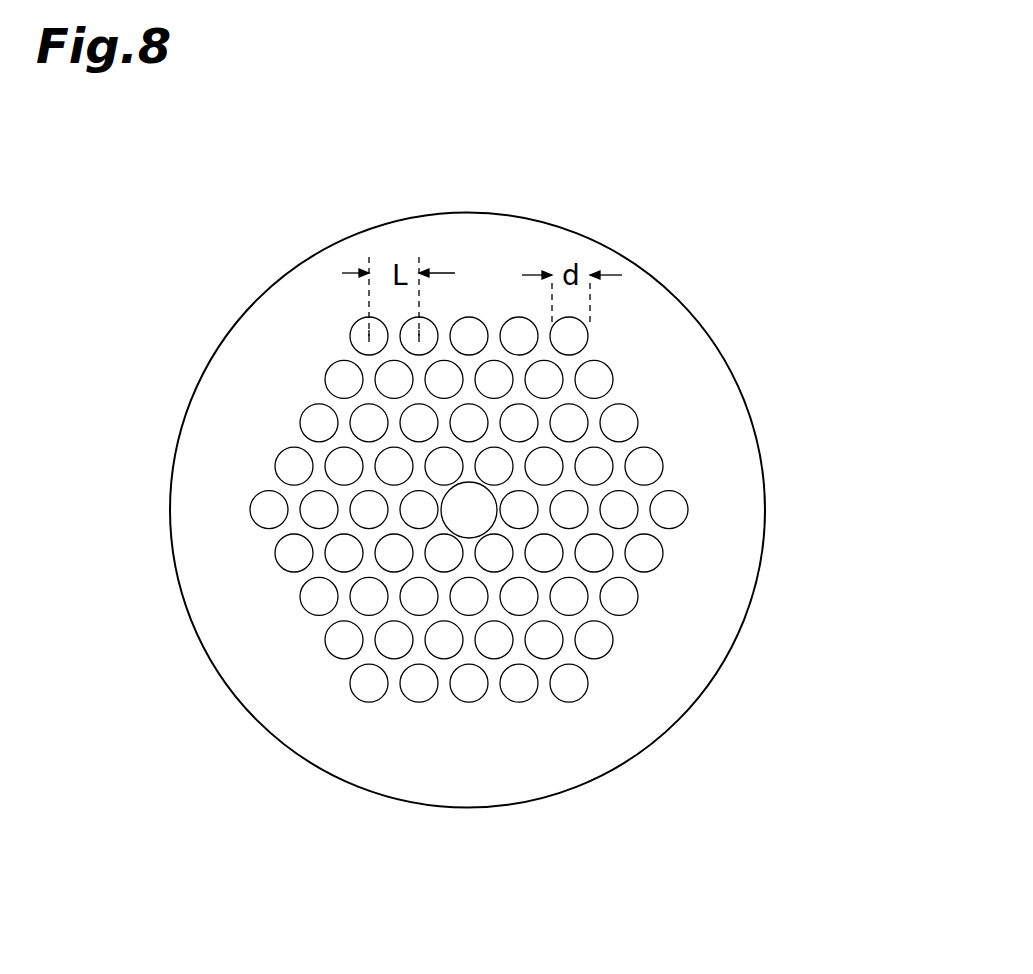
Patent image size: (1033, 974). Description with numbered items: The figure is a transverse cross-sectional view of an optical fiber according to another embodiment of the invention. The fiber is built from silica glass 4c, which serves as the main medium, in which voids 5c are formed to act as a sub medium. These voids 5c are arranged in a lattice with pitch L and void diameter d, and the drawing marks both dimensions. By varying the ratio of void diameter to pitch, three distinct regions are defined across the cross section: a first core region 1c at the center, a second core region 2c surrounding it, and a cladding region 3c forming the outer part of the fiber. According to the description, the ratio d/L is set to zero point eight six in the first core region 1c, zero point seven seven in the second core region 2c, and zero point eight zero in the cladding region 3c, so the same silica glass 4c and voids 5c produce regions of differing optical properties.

The first core region 1c is at (485, 480).
The second core region 2c is at (538, 503).
The cladding region 3c is at (758, 503).
The silica glass 4c is at (647, 518).
The voids 5c is at (647, 560).